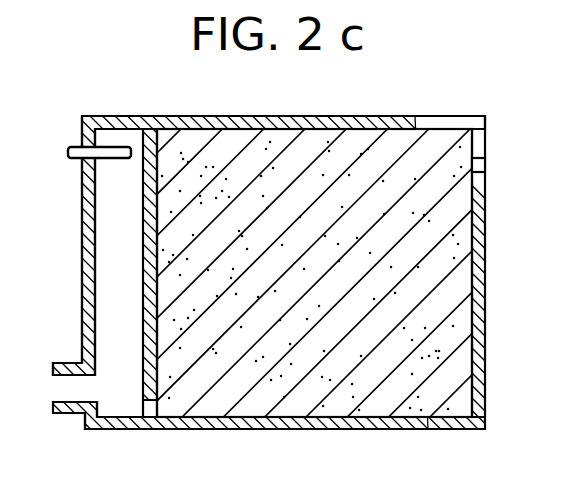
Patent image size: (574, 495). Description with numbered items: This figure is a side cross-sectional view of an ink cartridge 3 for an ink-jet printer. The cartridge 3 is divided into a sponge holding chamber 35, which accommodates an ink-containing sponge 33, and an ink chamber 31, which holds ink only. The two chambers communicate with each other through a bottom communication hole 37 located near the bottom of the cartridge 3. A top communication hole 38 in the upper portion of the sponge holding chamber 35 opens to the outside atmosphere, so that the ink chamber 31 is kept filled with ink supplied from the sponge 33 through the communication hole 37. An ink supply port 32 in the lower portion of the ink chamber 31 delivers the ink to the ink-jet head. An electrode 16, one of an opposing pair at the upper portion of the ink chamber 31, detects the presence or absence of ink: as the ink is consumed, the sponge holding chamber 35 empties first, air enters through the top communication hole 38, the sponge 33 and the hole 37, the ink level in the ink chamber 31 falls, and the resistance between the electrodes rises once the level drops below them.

The ink cartridge 3 is at (344, 117).
The electrode 16 is at (78, 149).
The ink chamber 31 is at (98, 250).
The ink supply port 32 is at (58, 390).
The sponge 33 is at (198, 136).
The sponge holding chamber 35 is at (410, 130).
The bottom communication hole 37 is at (153, 412).
The top communication hole 38 is at (479, 168).